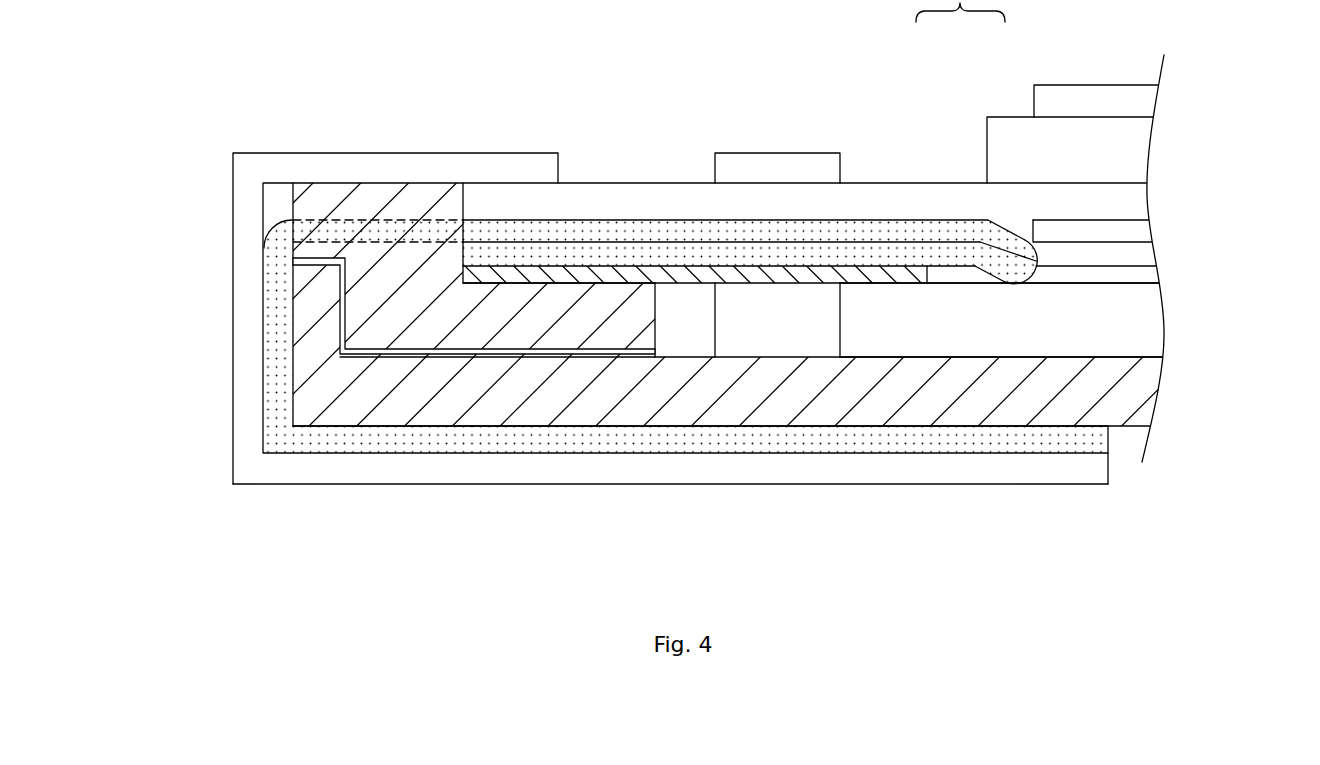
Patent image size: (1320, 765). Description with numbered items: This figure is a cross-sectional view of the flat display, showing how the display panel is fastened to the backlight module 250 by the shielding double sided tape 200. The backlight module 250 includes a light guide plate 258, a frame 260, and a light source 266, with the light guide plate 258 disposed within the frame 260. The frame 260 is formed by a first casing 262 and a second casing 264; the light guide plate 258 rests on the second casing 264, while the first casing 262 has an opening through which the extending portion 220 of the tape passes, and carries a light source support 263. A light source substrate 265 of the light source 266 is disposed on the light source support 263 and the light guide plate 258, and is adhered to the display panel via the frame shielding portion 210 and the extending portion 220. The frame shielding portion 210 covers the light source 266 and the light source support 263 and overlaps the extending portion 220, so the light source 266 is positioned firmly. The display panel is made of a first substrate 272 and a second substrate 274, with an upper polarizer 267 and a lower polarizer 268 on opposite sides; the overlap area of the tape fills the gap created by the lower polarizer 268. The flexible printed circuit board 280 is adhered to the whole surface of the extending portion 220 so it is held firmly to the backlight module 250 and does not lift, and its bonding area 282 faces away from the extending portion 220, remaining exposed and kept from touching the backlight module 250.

The shielding double sided tape 200 is at (592, 87).
The frame shielding portion 210 is at (680, 245).
The extending portion 220 is at (592, 222).
The backlight module 250 is at (1192, 337).
The light guide plate 258 is at (1152, 316).
The frame 260 is at (402, 548).
The first casing 262 is at (401, 320).
The light source support 263 is at (596, 283).
The second casing 264 is at (485, 406).
The light source substrate 265 is at (693, 273).
The light source 266 is at (780, 323).
The upper polarizer 267 is at (1138, 99).
The lower polarizer 268 is at (1137, 231).
The first substrate 272 is at (915, 197).
The second substrate 274 is at (1003, 125).
The flexible printed circuit board 280 is at (394, 172).
The bonding area 282 is at (910, 484).